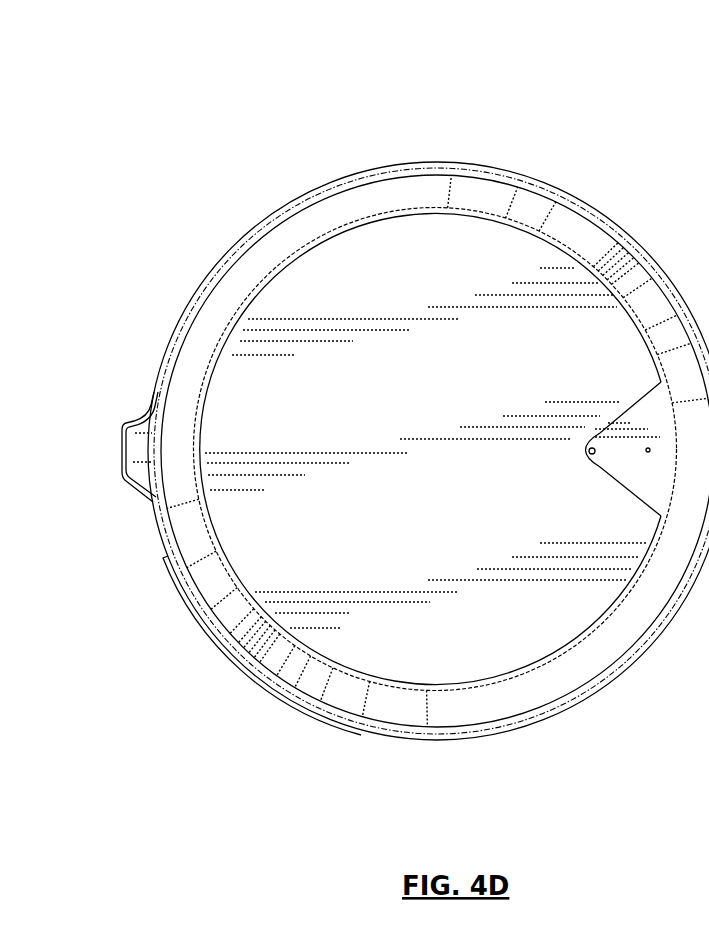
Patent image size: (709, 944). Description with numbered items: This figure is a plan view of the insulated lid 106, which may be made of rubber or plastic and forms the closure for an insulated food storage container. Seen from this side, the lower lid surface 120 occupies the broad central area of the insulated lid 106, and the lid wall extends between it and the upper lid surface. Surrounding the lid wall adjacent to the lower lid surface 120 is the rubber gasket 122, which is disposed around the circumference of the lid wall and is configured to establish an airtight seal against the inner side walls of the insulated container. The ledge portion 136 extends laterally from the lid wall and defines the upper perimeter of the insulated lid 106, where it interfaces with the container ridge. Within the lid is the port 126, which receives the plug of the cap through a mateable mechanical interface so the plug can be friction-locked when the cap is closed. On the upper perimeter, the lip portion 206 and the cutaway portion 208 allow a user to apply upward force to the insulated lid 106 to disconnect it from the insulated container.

The insulated lid 106 is at (252, 92).
The lower lid surface 120 is at (504, 252).
The ledge portion 136 is at (225, 250).
The lip portion 206 is at (142, 450).
The cutaway portion 208 is at (147, 531).
The port 126 is at (592, 455).
The rubber gasket 122 is at (290, 672).